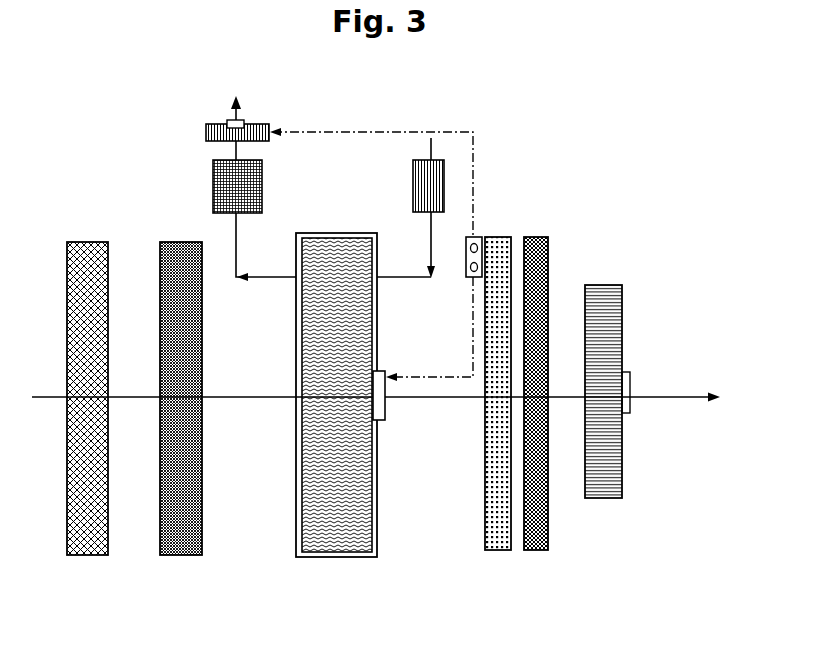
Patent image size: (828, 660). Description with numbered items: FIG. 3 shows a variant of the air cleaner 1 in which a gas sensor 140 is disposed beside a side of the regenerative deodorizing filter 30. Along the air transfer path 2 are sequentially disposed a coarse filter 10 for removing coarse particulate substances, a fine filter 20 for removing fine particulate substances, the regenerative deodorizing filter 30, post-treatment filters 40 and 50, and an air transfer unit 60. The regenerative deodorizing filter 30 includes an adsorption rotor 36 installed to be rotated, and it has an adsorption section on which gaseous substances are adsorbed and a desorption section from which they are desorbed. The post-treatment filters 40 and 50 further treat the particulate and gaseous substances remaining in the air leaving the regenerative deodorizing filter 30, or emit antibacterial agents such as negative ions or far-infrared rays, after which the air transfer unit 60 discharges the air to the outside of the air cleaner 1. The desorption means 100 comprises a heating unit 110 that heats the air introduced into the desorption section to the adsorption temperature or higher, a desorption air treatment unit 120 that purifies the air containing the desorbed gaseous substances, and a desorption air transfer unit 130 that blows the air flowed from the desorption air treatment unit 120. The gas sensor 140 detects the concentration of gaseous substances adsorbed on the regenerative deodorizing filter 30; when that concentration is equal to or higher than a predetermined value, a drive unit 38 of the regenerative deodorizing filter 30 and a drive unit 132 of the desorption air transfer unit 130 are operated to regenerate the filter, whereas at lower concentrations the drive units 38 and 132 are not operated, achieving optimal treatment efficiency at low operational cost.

The air cleaner 1 is at (587, 162).
The air transfer path 2 is at (670, 390).
The coarse filter 10 is at (89, 556).
The fine filter 20 is at (182, 556).
The regenerative deodorizing filter 30 is at (376, 435).
The adsorption rotor 36 is at (365, 525).
The drive unit 38 is at (383, 410).
The post-treatment filter 40 is at (500, 551).
The post-treatment filter 50 is at (540, 551).
The air transfer unit 60 is at (600, 499).
The desorption means 100 is at (433, 143).
The heating unit 110 is at (445, 176).
The desorption air treatment unit 120 is at (262, 185).
The desorption air transfer unit 130 is at (211, 110).
The drive unit 132 is at (243, 118).
The gas sensor 140 is at (478, 237).